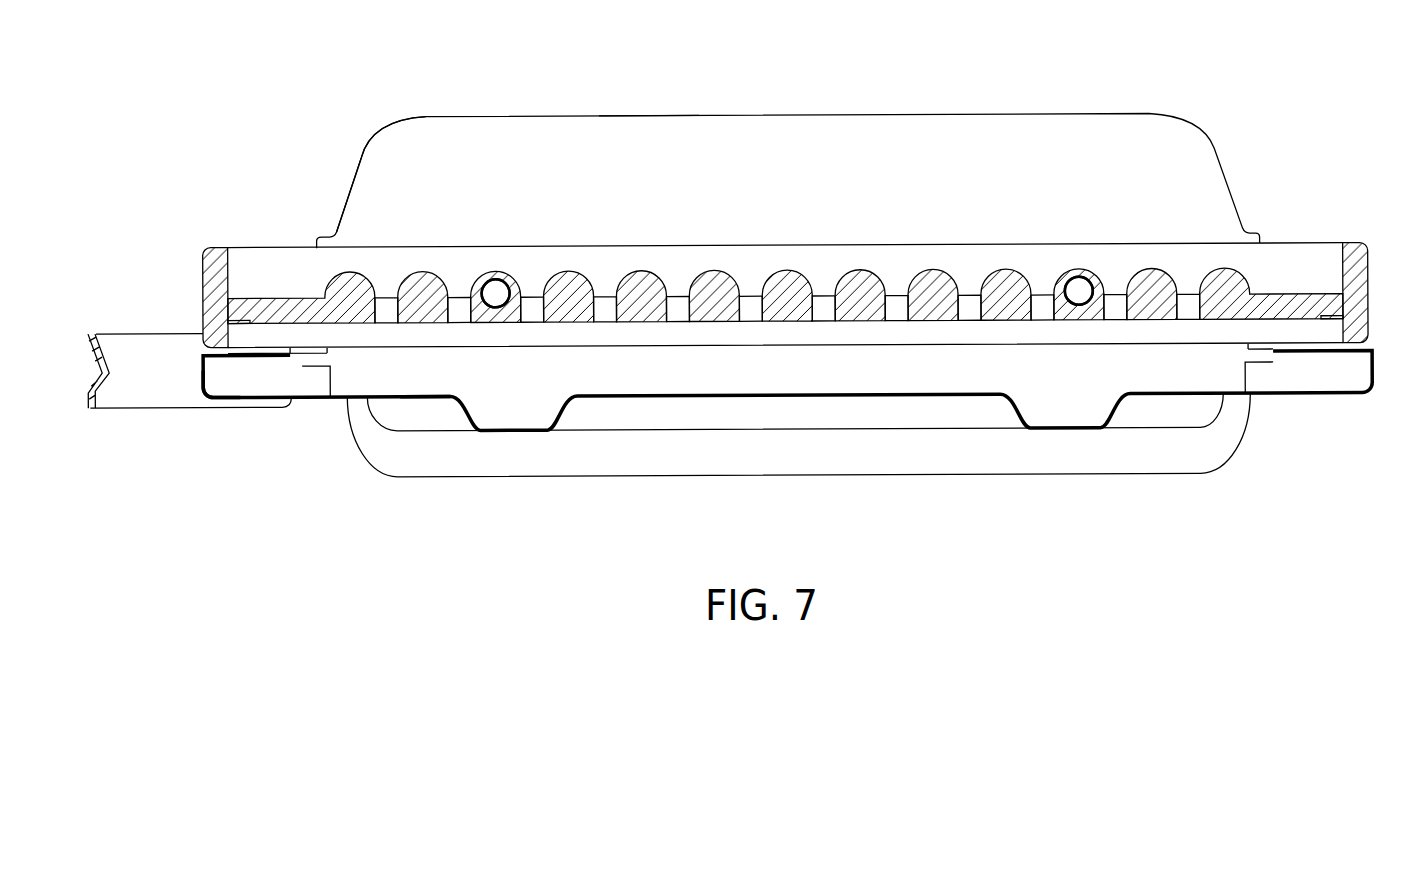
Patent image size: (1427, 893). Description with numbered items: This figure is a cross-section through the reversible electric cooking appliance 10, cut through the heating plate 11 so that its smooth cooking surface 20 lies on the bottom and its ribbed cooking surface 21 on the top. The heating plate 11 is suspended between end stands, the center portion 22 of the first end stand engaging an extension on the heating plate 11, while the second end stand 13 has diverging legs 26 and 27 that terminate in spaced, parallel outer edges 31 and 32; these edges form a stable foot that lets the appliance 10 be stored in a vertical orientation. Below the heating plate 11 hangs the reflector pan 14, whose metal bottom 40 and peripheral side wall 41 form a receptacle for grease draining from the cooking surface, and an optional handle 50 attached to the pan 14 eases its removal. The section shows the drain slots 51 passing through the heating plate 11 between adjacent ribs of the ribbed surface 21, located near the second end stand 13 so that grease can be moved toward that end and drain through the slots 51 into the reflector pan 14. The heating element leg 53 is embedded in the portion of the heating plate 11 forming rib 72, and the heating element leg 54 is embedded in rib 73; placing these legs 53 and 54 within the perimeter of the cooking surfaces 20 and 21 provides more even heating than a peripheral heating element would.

The cooking appliance 10 is at (737, 88).
The heating plate 11 is at (1368, 266).
The second end stand 13 is at (1042, 114).
The reflector pan 14 is at (427, 378).
The smooth cooking surface 20 is at (797, 347).
The ribbed cooking surface 21 is at (825, 266).
The center portion 22 is at (327, 278).
The leg 26 is at (620, 477).
The leg 27 is at (545, 135).
The outer edge 31 is at (955, 477).
The outer edge 32 is at (653, 117).
The metal bottom 40 is at (675, 380).
The peripheral side wall 41 is at (203, 382).
The handle 50 is at (88, 347).
The drain slots 51 is at (388, 323).
The heating element leg 53 is at (508, 283).
The heating element leg 54 is at (1092, 278).
The rib 72 is at (488, 280).
The rib 73 is at (1067, 278).